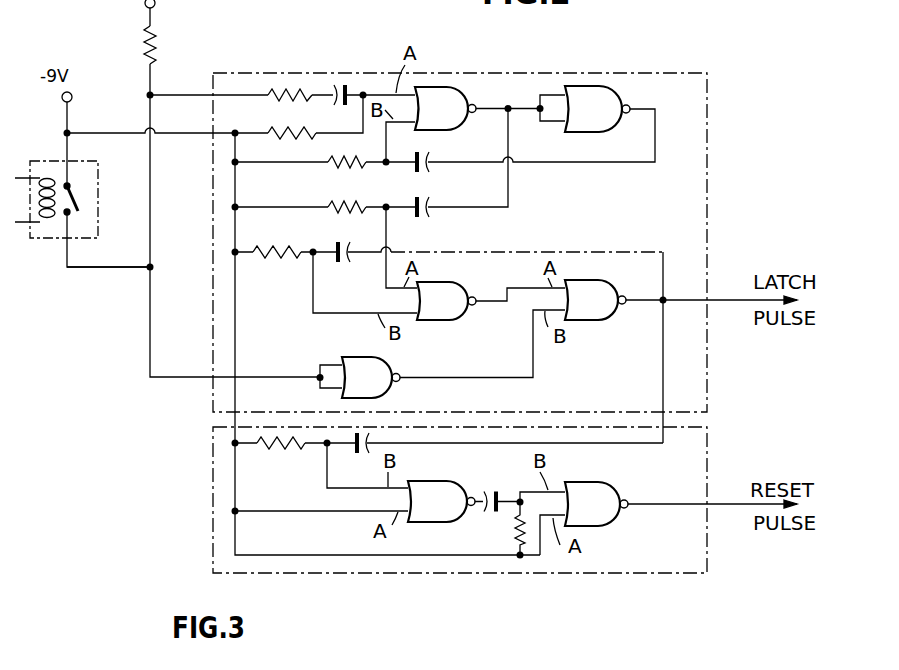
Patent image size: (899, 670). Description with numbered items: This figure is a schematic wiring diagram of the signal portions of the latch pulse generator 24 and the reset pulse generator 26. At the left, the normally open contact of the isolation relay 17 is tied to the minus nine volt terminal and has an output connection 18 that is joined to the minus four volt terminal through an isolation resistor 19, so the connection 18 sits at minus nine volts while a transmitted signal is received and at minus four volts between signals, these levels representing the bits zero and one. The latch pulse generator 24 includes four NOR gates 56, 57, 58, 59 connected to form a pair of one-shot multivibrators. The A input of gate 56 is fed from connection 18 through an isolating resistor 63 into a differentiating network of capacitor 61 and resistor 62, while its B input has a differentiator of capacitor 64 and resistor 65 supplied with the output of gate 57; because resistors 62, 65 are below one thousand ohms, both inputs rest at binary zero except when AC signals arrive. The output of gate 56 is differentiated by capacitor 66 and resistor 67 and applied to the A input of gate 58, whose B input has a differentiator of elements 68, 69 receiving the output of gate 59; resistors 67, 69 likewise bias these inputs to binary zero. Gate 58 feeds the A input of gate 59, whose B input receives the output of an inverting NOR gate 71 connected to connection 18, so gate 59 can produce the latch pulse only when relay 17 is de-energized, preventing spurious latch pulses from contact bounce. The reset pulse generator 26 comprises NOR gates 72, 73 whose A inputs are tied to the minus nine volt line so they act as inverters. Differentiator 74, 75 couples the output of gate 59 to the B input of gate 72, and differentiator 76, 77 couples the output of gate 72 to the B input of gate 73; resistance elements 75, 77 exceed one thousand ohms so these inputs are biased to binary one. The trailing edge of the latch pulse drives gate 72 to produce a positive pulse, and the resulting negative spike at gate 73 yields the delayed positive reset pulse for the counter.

The isolation relay 17 is at (99, 203).
The output connection 18 is at (106, 270).
The isolation resistor 19 is at (161, 31).
The latch pulse generator 24 is at (722, 196).
The reset pulse generator 26 is at (718, 456).
The NOR gate 56 is at (448, 92).
The NOR gate 57 is at (602, 98).
The NOR gate 58 is at (450, 290).
The NOR gate 59 is at (599, 322).
The capacitor 61 is at (336, 86).
The resistor 62 is at (277, 128).
The isolating resistor 63 is at (290, 86).
The capacitor 64 is at (428, 167).
The resistor 65 is at (330, 166).
The capacitor 66 is at (429, 212).
The resistor 67 is at (330, 210).
The capacitor 68 is at (341, 263).
The resistor 69 is at (282, 262).
The inverting NOR gate 71 is at (356, 356).
The NOR gate 72 is at (428, 485).
The NOR gate 73 is at (592, 482).
The capacitor 74 is at (357, 454).
The resistance element 75 is at (285, 451).
The capacitor 76 is at (499, 489).
The resistance element 77 is at (513, 526).